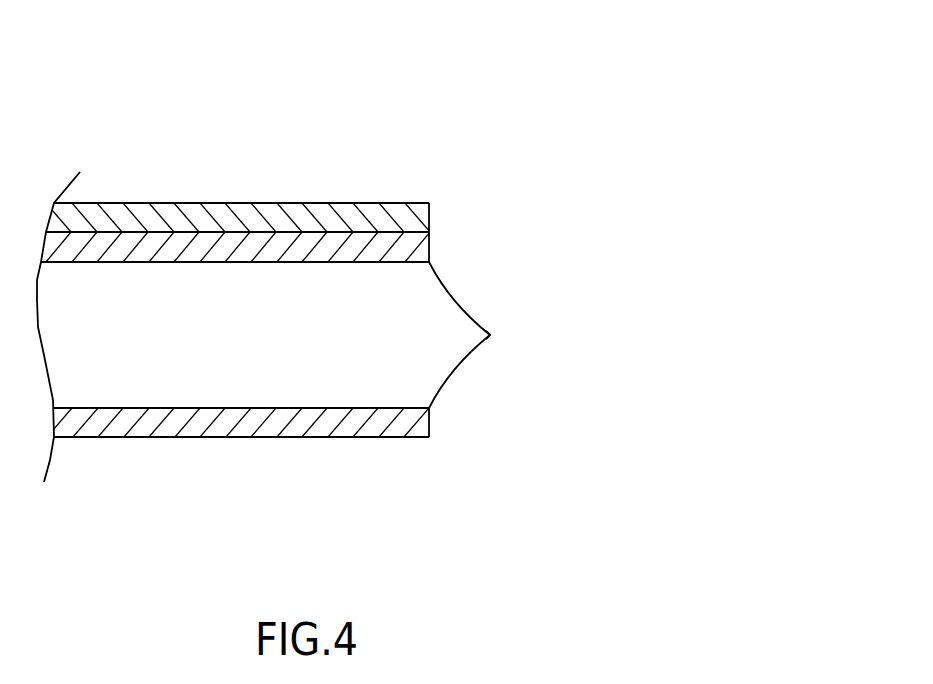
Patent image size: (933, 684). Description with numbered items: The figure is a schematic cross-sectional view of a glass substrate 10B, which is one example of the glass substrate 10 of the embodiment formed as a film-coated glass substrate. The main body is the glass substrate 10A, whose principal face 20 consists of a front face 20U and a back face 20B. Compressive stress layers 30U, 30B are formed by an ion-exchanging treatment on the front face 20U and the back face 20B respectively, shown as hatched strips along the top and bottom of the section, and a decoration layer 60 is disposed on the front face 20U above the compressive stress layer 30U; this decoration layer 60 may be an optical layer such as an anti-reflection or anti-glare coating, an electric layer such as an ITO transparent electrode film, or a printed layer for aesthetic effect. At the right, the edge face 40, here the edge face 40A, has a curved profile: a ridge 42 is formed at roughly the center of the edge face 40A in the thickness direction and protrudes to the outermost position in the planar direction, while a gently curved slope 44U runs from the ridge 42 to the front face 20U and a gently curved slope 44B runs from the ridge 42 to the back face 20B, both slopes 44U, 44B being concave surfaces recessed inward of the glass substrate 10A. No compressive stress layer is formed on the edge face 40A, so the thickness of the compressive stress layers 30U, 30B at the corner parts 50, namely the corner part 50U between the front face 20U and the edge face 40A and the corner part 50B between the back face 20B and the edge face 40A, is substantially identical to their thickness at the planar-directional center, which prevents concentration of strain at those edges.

The glass substrate 10 is at (368, 280).
The glass substrate 10B is at (368, 280).
The glass substrate 10A is at (400, 390).
The principal face 20 is at (288, 336).
The front face 20U is at (288, 196).
The back face 20B is at (278, 474).
The compressive stress layer 30U is at (148, 245).
The compressive stress layer 30B is at (170, 425).
The decoration layer 60 is at (225, 217).
The corner part 50 is at (479, 208).
The corner part 50U is at (430, 230).
The corner part 50B is at (430, 442).
The edge face 40 is at (564, 328).
The edge face 40A is at (564, 328).
The ridge 42 is at (490, 335).
The slope 44U is at (455, 293).
The slope 44B is at (457, 373).